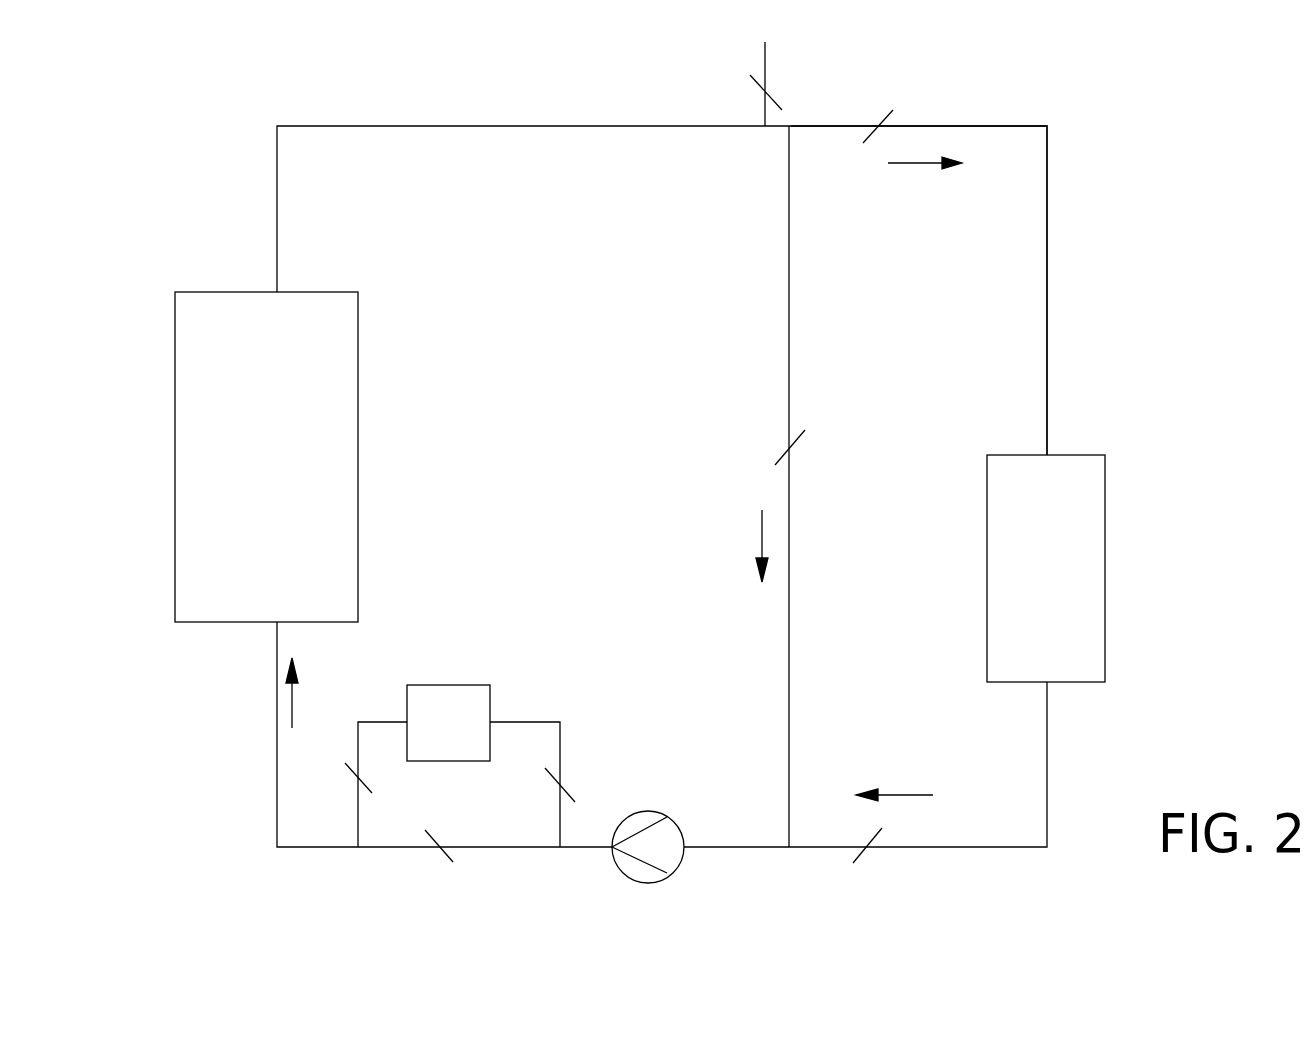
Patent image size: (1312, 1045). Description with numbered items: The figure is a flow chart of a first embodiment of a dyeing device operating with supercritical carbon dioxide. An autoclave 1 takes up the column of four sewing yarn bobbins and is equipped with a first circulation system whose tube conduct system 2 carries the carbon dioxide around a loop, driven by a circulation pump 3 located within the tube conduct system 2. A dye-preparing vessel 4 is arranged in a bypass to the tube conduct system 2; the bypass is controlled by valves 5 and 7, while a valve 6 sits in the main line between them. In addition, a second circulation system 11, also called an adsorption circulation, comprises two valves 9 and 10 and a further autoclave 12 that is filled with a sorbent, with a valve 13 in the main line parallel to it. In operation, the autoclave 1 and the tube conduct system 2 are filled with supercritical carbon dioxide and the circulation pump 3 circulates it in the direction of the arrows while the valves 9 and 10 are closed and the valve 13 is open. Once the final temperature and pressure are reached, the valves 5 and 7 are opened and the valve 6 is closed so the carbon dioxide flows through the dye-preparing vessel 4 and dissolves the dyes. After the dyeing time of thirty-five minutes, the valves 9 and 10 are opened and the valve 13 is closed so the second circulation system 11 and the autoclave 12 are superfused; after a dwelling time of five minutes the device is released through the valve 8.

The autoclave 1 is at (343, 393).
The tube conduct system 2 is at (789, 388).
The circulation pump 3 is at (667, 830).
The dye-preparing vessel 4 is at (482, 697).
The valve 5 is at (572, 785).
The valve 6 is at (441, 835).
The valve 7 is at (350, 782).
The valve 8 is at (775, 86).
The valve 9 is at (890, 114).
The valve 10 is at (857, 868).
The second circulation system 11 is at (1030, 120).
The autoclave 12 is at (1090, 555).
The valve 13 is at (792, 448).